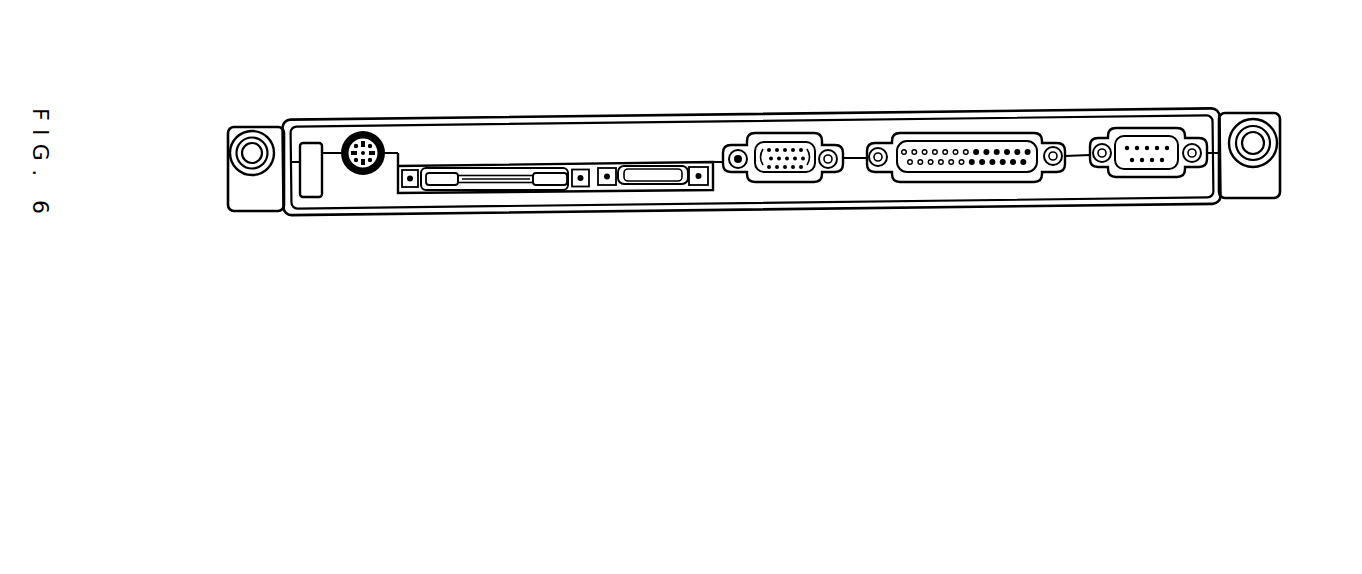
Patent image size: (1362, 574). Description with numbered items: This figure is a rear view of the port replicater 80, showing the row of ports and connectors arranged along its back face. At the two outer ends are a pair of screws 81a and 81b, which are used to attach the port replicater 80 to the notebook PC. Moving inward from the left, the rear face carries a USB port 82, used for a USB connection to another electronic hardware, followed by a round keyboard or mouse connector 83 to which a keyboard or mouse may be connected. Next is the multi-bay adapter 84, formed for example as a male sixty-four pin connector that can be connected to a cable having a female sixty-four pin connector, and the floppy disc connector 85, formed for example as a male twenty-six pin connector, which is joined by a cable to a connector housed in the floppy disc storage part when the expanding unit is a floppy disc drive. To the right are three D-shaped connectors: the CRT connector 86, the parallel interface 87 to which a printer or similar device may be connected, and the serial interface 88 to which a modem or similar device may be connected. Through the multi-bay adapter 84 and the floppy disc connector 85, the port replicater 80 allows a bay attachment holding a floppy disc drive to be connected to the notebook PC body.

The port replicater 80 is at (773, 97).
The screw 81a is at (263, 132).
The screw 81b is at (1255, 142).
The USB port 82 is at (312, 188).
The keyboard or mouse connector 83 is at (363, 131).
The multi-bay adapter 84 is at (438, 183).
The floppy disc connector 85 is at (608, 173).
The CRT connector 86 is at (785, 180).
The parallel interface 87 is at (953, 178).
The serial interface 88 is at (1135, 167).